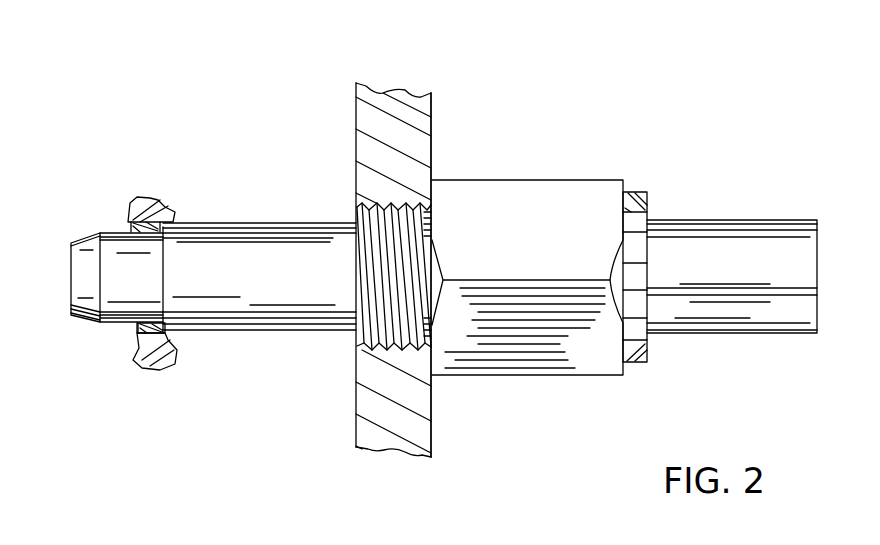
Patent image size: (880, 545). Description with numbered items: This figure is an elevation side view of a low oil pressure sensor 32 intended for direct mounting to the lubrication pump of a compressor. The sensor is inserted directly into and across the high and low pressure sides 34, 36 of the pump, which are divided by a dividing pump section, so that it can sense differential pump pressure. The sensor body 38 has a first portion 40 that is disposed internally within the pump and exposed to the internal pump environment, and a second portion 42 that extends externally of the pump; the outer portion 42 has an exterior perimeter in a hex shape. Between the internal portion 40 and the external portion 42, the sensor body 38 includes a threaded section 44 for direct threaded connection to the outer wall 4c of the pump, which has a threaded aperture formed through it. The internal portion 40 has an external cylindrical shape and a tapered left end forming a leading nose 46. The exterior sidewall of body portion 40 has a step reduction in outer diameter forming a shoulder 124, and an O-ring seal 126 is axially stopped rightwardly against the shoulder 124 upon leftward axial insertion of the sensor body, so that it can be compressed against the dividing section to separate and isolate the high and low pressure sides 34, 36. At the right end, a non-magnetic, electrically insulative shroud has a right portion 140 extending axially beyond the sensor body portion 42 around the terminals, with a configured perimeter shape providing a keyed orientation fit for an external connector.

The outer wall 4c is at (405, 90).
The sensor body 38 is at (433, 181).
The low oil pressure sensor 32 is at (539, 240).
The second portion 42 is at (602, 192).
The threaded section 44 is at (408, 243).
The first portion 40 is at (293, 248).
The high pressure side 34 is at (221, 214).
The low pressure side 36 is at (113, 214).
The leading nose 46 is at (85, 240).
The shoulder 124 is at (162, 282).
The O-ring seal 126 is at (143, 332).
The right portion 140 is at (737, 240).